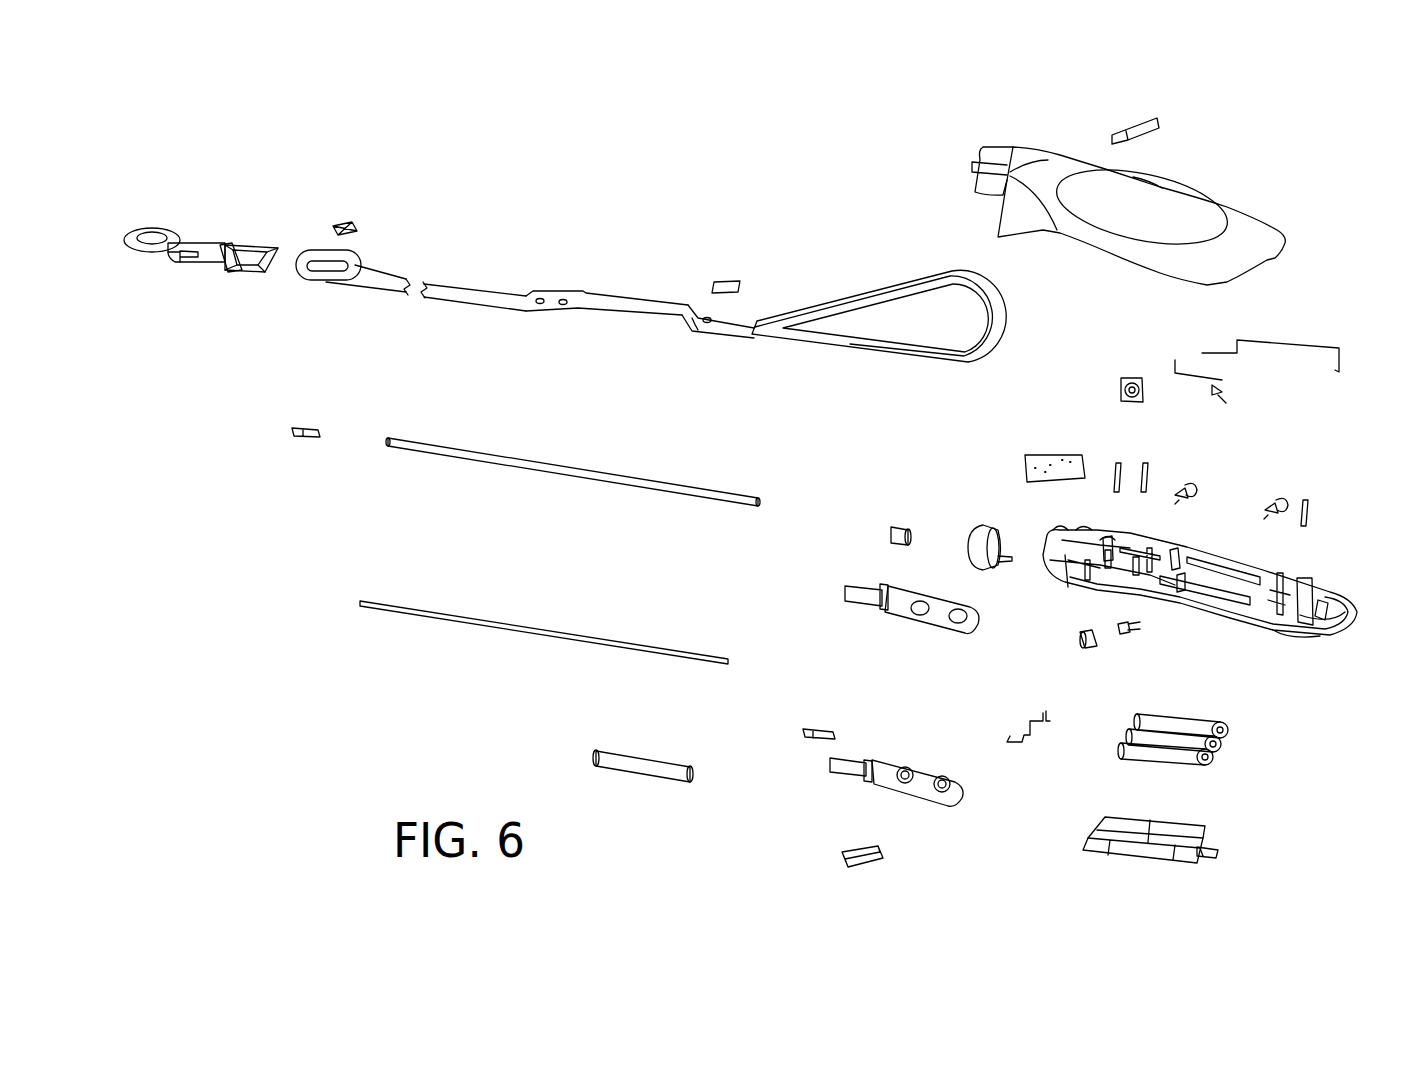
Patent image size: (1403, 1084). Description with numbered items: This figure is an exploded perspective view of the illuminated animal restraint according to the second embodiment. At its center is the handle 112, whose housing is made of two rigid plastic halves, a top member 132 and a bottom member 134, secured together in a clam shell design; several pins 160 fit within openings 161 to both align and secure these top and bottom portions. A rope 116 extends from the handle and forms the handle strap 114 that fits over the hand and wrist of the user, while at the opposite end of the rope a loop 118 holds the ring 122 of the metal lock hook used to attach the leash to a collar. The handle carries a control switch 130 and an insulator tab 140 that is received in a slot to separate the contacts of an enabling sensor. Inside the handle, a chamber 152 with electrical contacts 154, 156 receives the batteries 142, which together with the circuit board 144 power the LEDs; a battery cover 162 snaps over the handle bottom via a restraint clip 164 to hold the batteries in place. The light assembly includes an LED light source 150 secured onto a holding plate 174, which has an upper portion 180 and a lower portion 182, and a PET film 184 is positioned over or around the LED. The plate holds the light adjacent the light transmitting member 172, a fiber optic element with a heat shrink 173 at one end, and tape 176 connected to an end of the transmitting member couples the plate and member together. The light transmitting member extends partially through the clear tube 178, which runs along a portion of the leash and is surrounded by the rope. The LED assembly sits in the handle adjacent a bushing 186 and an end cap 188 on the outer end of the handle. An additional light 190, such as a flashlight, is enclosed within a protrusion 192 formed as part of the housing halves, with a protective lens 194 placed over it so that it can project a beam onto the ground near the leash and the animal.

The handle 112 is at (1190, 167).
The handle strap 114 is at (873, 292).
The rope 116 is at (395, 290).
The loop 118 is at (315, 278).
The ring 122 is at (253, 250).
The control switch 130 is at (1125, 378).
The top member 132 is at (1233, 217).
The bottom member 134 is at (1292, 636).
The insulator tab 140 is at (1140, 120).
The batteries 142 is at (1140, 750).
The circuit board 144 is at (1043, 460).
The LED light source 150 is at (1020, 722).
The chamber 152 is at (1227, 625).
The electrical contact 154 is at (1195, 477).
The electrical contact 156 is at (1287, 487).
The pins 160 is at (1116, 470).
The openings 161 is at (1100, 538).
The battery cover 162 is at (1135, 855).
The restraint clip 164 is at (1212, 858).
The light transmitting member 172 is at (550, 632).
The heat shrink 173 is at (633, 760).
The holding plate 174 is at (838, 584).
The tape 176 is at (305, 428).
The clear tube 178 is at (588, 472).
The upper portion 180 is at (898, 612).
The lower portion 182 is at (888, 787).
The PET film 184 is at (855, 860).
The bushing 186 is at (893, 528).
The end cap 188 is at (985, 528).
The light 190 is at (1128, 635).
The protrusion 192 is at (1015, 235).
The protective lens 194 is at (1087, 648).